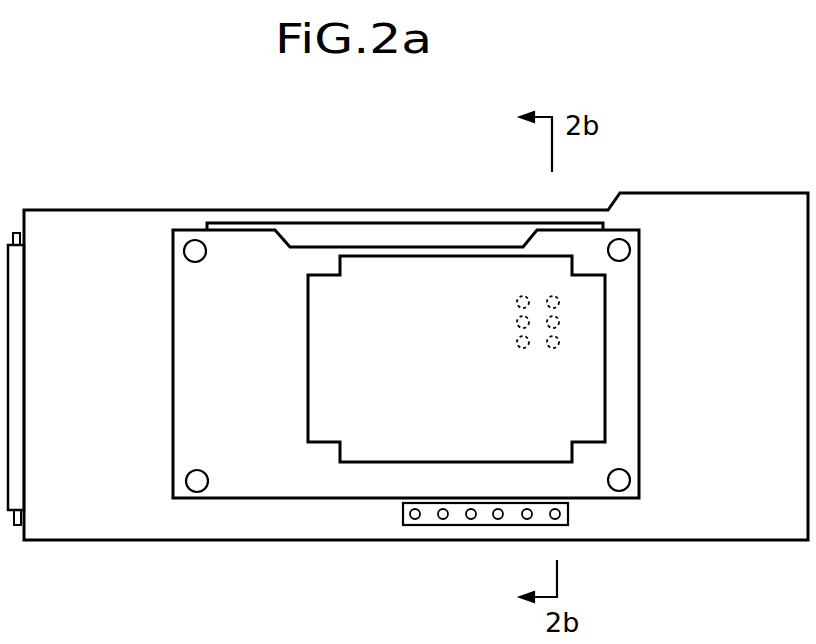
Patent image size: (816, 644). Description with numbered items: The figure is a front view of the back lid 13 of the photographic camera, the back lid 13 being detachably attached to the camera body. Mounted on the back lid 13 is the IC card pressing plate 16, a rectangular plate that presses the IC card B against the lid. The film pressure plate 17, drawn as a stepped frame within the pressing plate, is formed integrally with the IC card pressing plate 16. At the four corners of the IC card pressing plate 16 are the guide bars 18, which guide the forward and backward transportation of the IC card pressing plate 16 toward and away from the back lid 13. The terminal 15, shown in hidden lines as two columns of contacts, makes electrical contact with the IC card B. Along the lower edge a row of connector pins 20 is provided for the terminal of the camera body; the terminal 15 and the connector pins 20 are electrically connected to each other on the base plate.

The back lid 13 is at (74, 218).
The IC card B is at (407, 230).
The terminal 15 is at (553, 296).
The IC card pressing plate 16 is at (250, 245).
The film pressure plate 17 is at (357, 265).
The guide bar 18 is at (620, 249).
The connector pin 20 is at (415, 519).